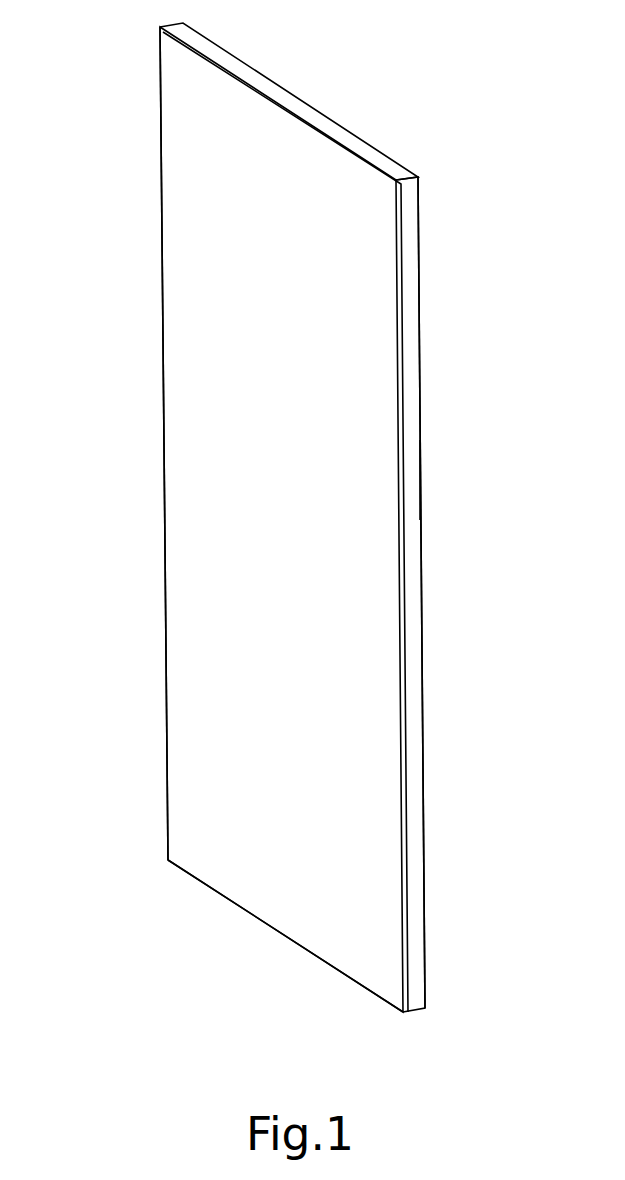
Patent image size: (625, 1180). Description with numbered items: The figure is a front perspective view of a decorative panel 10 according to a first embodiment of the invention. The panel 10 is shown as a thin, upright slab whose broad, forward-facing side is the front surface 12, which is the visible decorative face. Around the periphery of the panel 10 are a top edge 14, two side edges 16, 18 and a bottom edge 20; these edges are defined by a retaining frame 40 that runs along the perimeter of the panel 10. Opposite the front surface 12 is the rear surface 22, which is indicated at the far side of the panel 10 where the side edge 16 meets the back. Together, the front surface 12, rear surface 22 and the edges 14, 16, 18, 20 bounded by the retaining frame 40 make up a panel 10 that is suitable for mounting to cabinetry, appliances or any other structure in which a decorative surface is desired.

The decorative panel 10 is at (365, 122).
The front surface 12 is at (287, 377).
The top edge 14 is at (272, 80).
The side edge 16 is at (421, 525).
The side edge 18 is at (165, 531).
The bottom edge 20 is at (282, 933).
The rear surface 22 is at (420, 469).
The retaining frame 40 is at (416, 344).